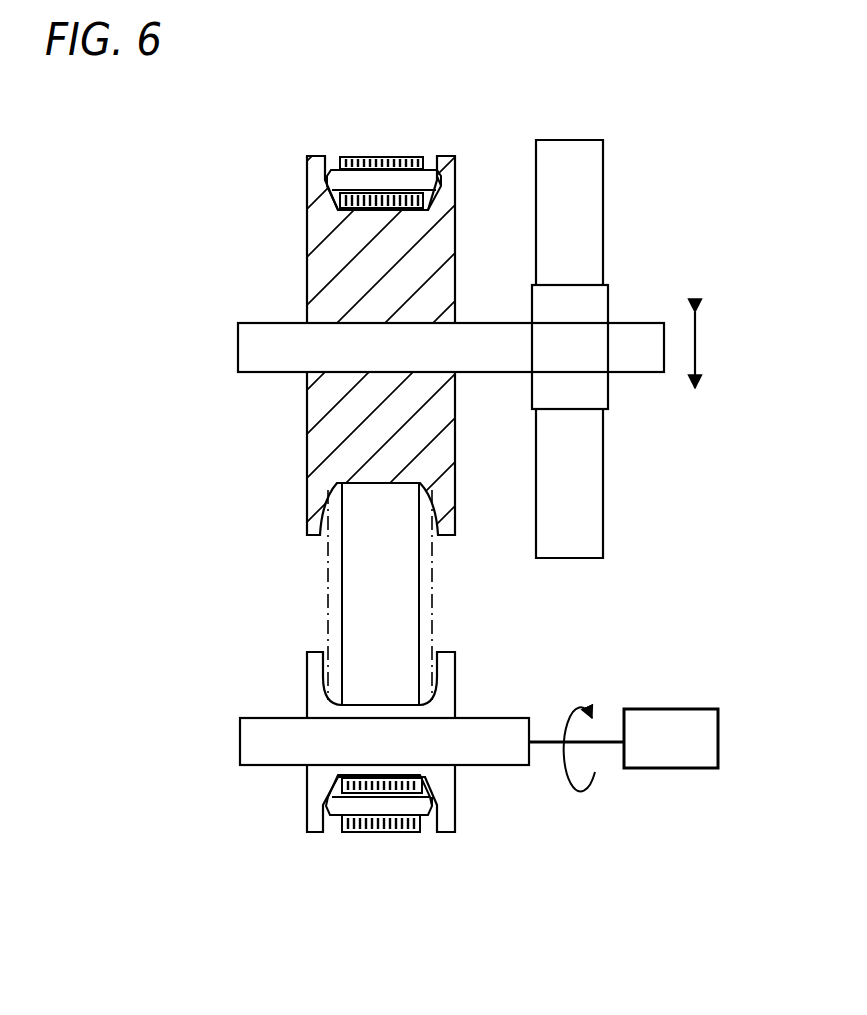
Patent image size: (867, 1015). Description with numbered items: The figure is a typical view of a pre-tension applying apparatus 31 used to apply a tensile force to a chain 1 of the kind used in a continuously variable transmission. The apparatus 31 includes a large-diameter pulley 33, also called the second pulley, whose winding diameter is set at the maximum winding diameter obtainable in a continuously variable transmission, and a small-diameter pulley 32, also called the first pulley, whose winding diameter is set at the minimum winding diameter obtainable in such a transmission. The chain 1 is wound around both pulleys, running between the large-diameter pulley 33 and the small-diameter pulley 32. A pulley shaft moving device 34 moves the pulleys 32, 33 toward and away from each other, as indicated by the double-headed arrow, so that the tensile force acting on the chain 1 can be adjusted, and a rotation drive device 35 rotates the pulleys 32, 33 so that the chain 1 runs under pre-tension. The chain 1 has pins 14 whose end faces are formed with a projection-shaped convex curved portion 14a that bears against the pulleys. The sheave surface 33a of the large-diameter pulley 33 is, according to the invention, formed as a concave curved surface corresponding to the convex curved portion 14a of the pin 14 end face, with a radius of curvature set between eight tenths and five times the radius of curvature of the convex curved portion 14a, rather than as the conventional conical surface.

The chain 1 is at (361, 156).
The pin 14 is at (345, 184).
The convex curved portion 14a is at (429, 190).
The pre-tension applying apparatus 31 is at (660, 270).
The small-diameter pulley 32 is at (307, 683).
The large-diameter pulley 33 is at (307, 273).
The sheave surface 33a is at (431, 158).
The pulley shaft moving device 34 is at (603, 443).
The rotation drive device 35 is at (660, 709).